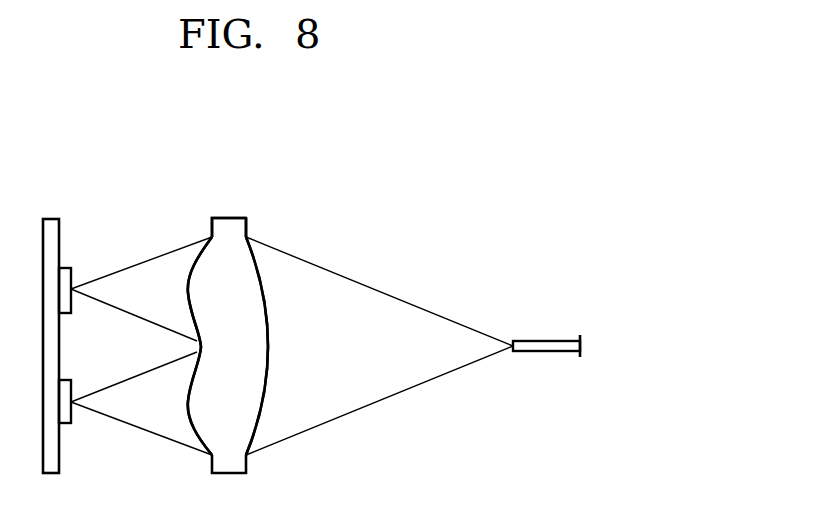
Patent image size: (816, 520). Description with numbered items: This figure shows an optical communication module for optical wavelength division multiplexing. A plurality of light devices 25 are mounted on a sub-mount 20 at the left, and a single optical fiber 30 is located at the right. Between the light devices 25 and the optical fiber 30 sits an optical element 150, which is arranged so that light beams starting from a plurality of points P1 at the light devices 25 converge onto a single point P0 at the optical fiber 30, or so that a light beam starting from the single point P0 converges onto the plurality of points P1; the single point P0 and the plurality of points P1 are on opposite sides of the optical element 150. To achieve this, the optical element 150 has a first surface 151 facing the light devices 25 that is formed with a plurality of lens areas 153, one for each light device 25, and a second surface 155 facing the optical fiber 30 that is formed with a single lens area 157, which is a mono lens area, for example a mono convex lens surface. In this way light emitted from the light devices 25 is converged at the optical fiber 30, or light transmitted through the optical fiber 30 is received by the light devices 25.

The sub-mount 20 is at (50, 219).
The light devices 25 is at (68, 268).
The optical element 150 is at (231, 198).
The first surface 151 is at (212, 228).
The lens areas 153 is at (188, 293).
The second surface 155 is at (246, 228).
The single lens area 157 is at (268, 347).
The optical fiber 30 is at (545, 341).
The plurality of points P1 is at (73, 288).
The single point P0 is at (512, 350).